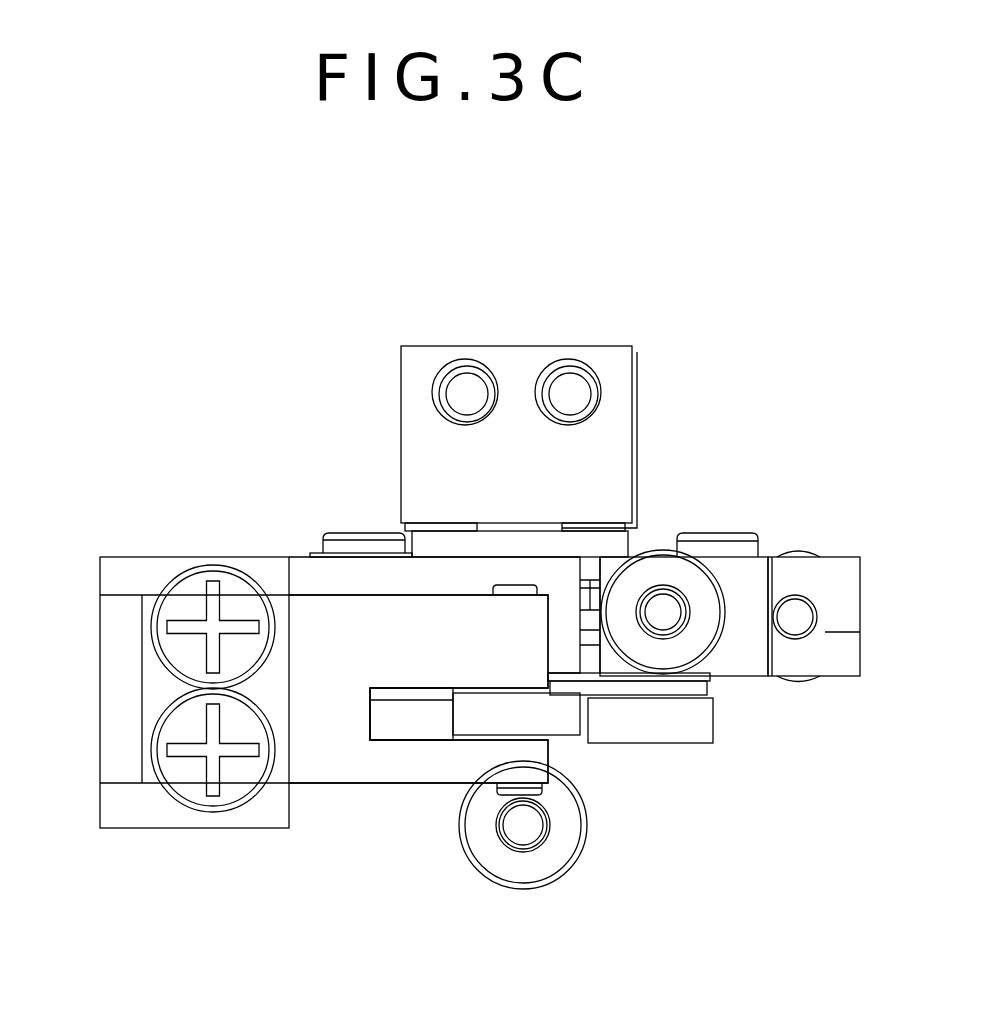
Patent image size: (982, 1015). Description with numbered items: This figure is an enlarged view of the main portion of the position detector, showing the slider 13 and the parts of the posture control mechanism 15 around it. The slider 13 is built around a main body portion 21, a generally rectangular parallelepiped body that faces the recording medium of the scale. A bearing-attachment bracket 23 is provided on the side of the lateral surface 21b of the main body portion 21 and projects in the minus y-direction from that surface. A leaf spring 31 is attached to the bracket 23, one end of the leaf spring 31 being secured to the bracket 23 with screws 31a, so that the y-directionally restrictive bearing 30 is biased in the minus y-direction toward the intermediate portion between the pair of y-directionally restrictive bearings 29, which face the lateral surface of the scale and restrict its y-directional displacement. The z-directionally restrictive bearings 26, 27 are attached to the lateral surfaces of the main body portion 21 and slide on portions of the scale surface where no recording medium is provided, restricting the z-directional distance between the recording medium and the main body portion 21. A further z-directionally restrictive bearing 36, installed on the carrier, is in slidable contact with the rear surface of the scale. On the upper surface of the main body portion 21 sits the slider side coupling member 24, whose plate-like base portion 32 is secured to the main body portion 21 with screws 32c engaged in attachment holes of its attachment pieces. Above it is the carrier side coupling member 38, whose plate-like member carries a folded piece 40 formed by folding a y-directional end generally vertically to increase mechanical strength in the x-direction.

The slider 13 is at (287, 423).
The posture control mechanism 15 is at (655, 380).
The main body portion 21 is at (310, 568).
The lateral surface 21b is at (325, 577).
The bearing-attachment bracket 23 is at (120, 682).
The slider side coupling member 24 is at (605, 545).
The z-directionally restrictive bearing 26 is at (800, 683).
The z-directionally restrictive bearing 27 is at (705, 627).
The y-directionally restrictive bearing 29 is at (423, 723).
The y-directionally restrictive bearing 30 is at (557, 725).
The leaf spring 31 is at (340, 762).
The screws 31a is at (183, 597).
The base portion 32 is at (462, 547).
The screws 32c is at (357, 548).
The z-directionally restrictive bearing 36 is at (527, 863).
The carrier side coupling member 38 is at (493, 338).
The folded piece 40 is at (420, 368).